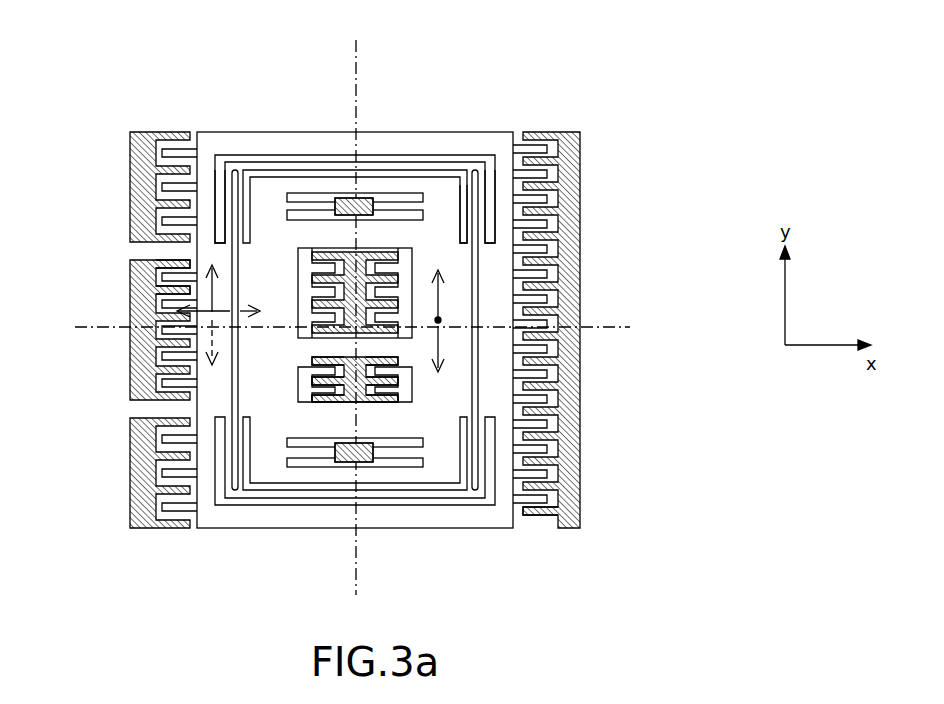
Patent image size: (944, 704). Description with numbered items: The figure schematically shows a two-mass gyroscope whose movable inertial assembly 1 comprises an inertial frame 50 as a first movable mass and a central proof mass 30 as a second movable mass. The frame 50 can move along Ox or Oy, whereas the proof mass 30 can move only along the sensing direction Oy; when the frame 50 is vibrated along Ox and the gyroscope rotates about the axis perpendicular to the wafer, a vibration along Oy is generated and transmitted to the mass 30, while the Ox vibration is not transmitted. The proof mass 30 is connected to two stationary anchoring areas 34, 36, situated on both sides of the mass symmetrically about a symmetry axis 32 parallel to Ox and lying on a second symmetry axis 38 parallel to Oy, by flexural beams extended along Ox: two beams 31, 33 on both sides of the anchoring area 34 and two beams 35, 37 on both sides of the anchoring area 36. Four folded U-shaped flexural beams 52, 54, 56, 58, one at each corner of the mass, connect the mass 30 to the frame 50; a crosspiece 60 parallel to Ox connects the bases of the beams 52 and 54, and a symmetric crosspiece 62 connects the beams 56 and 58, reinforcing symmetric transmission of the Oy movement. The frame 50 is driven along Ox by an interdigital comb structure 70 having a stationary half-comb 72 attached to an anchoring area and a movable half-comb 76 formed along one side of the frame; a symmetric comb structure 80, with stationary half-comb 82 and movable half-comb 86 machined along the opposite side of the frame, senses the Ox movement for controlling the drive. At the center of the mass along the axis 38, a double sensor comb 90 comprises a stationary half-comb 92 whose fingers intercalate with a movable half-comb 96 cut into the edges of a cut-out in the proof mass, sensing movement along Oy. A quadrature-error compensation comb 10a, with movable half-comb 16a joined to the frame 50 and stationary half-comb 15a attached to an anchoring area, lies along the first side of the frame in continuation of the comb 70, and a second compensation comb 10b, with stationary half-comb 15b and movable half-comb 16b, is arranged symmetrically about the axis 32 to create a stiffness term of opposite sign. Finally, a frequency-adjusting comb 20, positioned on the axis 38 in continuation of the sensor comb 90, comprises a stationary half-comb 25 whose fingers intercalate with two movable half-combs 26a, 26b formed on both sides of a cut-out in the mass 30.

The movable inertial assembly 1 is at (556, 66).
The quadrature-error compensation comb 10a is at (120, 74).
The second compensation comb 10b is at (120, 584).
The stationary half-comb 15a is at (160, 132).
The stationary half-comb 15b is at (155, 530).
The movable half-comb 16a is at (183, 143).
The movable half-comb 16b is at (182, 512).
The frequency adjusting comb 20 is at (368, 585).
The stationary half-comb 25 is at (385, 471).
The movable half-comb 26a is at (395, 404).
The movable half-comb 26b is at (367, 404).
The proof mass 30 is at (464, 178).
The flexural beam 31 is at (447, 193).
The symmetry axis 32 is at (368, 327).
The flexural beam 33 is at (318, 206).
The anchoring area 34 is at (405, 207).
The flexural beam 35 is at (408, 452).
The anchoring area 36 is at (342, 458).
The flexural beam 37 is at (298, 458).
The symmetry axis 38 is at (357, 302).
The inertial frame 50 is at (371, 148).
The flexural beam 52 is at (222, 213).
The flexural beam 54 is at (488, 200).
The flexural beam 56 is at (230, 486).
The flexural beam 58 is at (478, 446).
The crosspiece 60 is at (292, 163).
The crosspiece 62 is at (455, 492).
The interdigital comb structure 70 is at (68, 245).
The stationary half-comb 72 is at (163, 259).
The movable half-comb 76 is at (157, 285).
The interdigital comb structure 80 is at (644, 500).
The stationary half-comb 82 is at (540, 512).
The movable half-comb 86 is at (563, 526).
The sensor comb 90 is at (640, 300).
The stationary half-comb 92 is at (385, 277).
The movable half-comb 96 is at (322, 331).